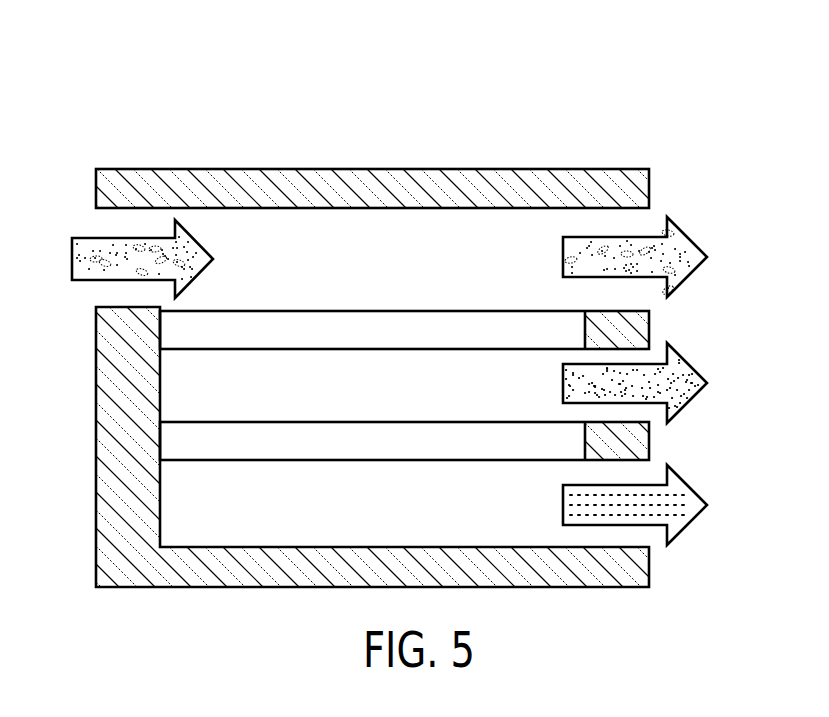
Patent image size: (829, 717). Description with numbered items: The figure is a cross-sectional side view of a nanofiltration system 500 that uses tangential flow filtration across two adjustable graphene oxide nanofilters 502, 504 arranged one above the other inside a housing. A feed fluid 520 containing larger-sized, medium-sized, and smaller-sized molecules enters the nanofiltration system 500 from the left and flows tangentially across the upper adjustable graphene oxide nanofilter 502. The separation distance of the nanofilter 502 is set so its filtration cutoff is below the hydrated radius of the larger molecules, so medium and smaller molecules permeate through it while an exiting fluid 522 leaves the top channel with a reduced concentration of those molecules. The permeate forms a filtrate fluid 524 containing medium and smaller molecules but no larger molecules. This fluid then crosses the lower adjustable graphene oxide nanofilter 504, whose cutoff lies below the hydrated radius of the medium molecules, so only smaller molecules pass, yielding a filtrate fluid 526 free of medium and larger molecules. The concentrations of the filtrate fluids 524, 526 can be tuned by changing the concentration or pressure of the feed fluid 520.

The nanofiltration system 500 is at (634, 80).
The adjustable graphene oxide nanofilter 502 is at (478, 318).
The adjustable graphene oxide nanofilter 504 is at (478, 430).
The feed fluid 520 is at (188, 256).
The exiting fluid 522 is at (682, 244).
The filtrate fluid 524 is at (682, 372).
The filtrate fluid 526 is at (682, 496).